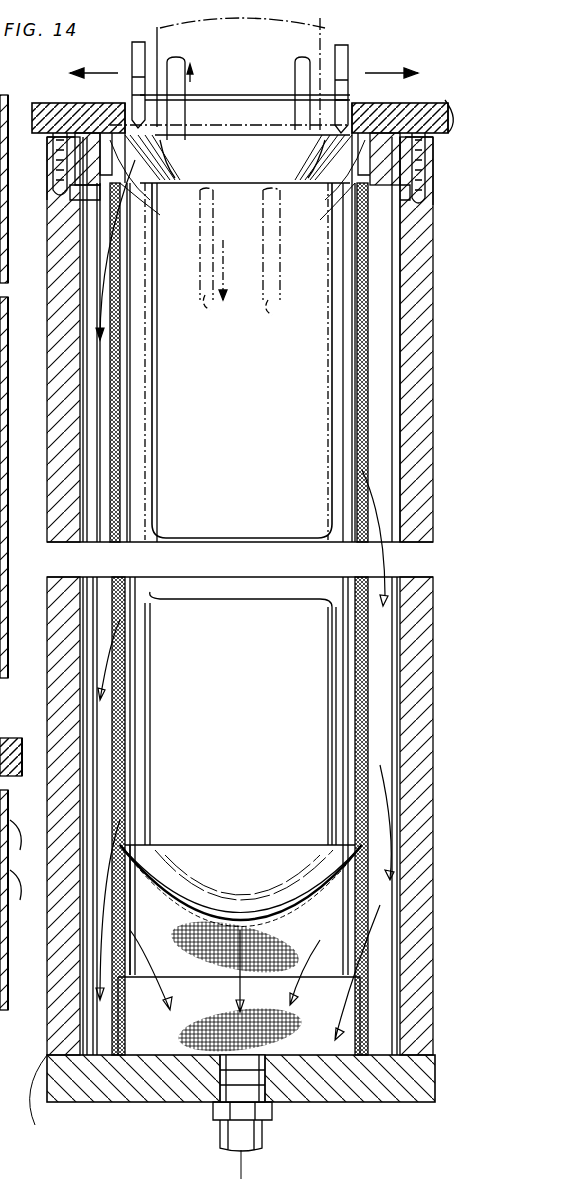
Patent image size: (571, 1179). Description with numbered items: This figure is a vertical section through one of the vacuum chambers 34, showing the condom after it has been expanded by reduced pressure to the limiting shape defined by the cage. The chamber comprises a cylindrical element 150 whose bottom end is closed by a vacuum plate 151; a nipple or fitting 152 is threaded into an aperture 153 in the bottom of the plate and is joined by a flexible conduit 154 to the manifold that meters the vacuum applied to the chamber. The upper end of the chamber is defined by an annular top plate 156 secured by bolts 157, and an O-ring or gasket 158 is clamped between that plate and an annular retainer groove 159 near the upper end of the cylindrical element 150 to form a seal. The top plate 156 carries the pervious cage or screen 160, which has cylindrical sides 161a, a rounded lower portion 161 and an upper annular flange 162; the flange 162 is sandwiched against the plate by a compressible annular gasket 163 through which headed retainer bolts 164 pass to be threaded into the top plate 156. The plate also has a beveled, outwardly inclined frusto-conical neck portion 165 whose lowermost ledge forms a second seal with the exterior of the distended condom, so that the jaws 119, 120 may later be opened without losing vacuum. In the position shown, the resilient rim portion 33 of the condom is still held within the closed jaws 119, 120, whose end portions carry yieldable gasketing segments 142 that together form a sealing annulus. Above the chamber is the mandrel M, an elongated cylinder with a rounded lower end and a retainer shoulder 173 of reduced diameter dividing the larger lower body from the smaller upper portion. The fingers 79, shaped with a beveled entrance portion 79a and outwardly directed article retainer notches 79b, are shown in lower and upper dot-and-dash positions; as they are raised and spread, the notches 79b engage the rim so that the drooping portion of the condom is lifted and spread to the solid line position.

The vacuum chamber 34 is at (440, 1050).
The pervious cage or screen 160 is at (40, 420).
The cylindrical sides 161a is at (120, 480).
The rounded lower portion 161 is at (258, 918).
The jaw 119 is at (75, 104).
The jaw 120 is at (418, 105).
The yieldable gasketing segment 142 is at (448, 104).
The O-ring or gasket 158 is at (98, 130).
The upper annular flange 162 is at (58, 160).
The annular retainer groove 159 is at (70, 192).
The annular top plate 156 is at (422, 180).
The bolt 157 is at (415, 202).
The retainer shoulder 173 is at (170, 160).
The frusto-conical neck portion 165 is at (325, 150).
The compressible annular gasket 163 is at (170, 195).
The headed retainer bolt 164 is at (355, 205).
The finger 79 is at (160, 60).
The beveled entrance portion 79a is at (220, 310).
The article retainer notch 79b is at (205, 298).
The resilient rim portion 33 is at (349, 75).
The mandrel M is at (322, 35).
The vacuum plate 151 is at (140, 1102).
The cylindrical element 150 is at (48, 1095).
The nipple or fitting 152 is at (215, 1110).
The aperture 153 is at (270, 1110).
The flexible conduit 154 is at (222, 1138).